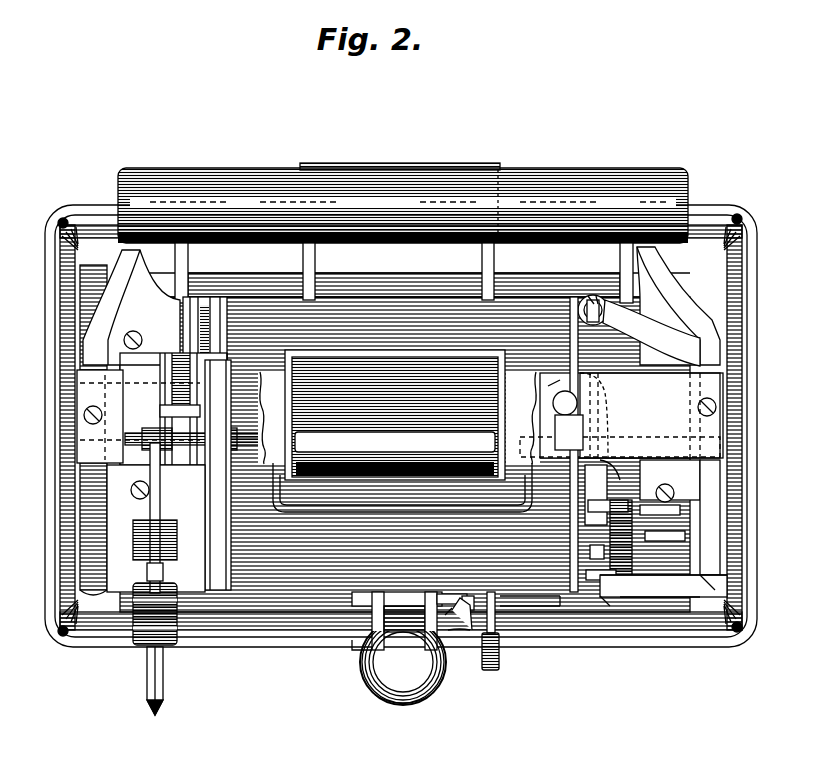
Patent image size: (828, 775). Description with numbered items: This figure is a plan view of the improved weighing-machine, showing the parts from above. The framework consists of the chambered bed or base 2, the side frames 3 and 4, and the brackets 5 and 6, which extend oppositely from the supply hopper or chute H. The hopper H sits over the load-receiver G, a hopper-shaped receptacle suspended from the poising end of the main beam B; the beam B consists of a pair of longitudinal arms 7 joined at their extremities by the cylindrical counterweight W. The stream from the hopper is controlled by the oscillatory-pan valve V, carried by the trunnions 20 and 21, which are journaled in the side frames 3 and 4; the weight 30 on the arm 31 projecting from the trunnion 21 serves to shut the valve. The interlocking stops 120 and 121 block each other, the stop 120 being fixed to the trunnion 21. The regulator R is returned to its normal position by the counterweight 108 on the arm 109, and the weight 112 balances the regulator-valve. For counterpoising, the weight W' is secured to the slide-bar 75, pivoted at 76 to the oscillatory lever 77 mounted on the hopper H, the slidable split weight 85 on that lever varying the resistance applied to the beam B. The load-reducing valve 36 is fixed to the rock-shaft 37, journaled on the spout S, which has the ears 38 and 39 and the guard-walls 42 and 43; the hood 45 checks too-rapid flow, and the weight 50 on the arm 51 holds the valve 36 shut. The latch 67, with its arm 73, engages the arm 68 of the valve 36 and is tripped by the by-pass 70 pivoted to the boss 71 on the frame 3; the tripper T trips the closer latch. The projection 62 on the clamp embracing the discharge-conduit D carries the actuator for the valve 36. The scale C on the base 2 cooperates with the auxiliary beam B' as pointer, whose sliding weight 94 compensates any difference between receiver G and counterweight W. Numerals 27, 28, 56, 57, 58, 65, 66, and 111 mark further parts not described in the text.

The chambered bed or base 2 is at (273, 648).
The load-receiver G is at (385, 438).
The cylindrical counterweight W is at (403, 196).
The counterweight 108 is at (404, 165).
The main beam B is at (404, 272).
The arm 109 is at (315, 260).
The longitudinal arms 7 is at (175, 270).
The interlocking stop 121 is at (183, 330).
The interlocking stop 120 is at (200, 398).
The valve-trunnion 21 is at (138, 432).
The bracket 6 is at (90, 430).
The supply hopper or chute H is at (399, 415).
The stream controller or valve V is at (333, 510).
The regulator R is at (220, 590).
The side frame 4 is at (80, 515).
The arm 31 is at (160, 470).
The weight 30 is at (142, 535).
The auxiliary beam B' is at (138, 573).
The sliding weight 94 is at (150, 622).
The scale C is at (163, 672).
The counterpoise weight W' is at (585, 288).
The pivot 76 is at (580, 312).
The slide-bar 75 is at (590, 298).
The bracket 5 is at (710, 385).
The valve-trunnion 20 is at (682, 432).
The bar 28 is at (630, 458).
The slidable split weight 85 is at (555, 420).
The oscillatory lever 77 is at (542, 383).
The arm 27 is at (622, 486).
The boss 71 is at (676, 493).
The side frame 3 is at (720, 498).
The by-pass 70 is at (588, 506).
The arm of latch 73 is at (585, 530).
The latch 67 is at (590, 552).
The arm of load-reducing valve 68 is at (586, 575).
The weight 112 is at (660, 511).
The spring 111 is at (665, 536).
The spring 56 is at (630, 580).
The spring 57 is at (703, 587).
The ear 38 is at (365, 592).
The overhanging hood 45 is at (400, 610).
The ear 39 is at (440, 594).
The projection 62 is at (455, 594).
The pin 65 is at (468, 596).
The rock-shaft 37 is at (520, 596).
The guard-wall 43 is at (365, 628).
The hook 66 is at (468, 625).
The guard-wall 42 is at (446, 640).
The arm 51 is at (497, 620).
The valve-closing weight 50 is at (500, 658).
The tripper T is at (566, 619).
The bracket 58 is at (612, 606).
The load-reducing valve 36 is at (403, 645).
The spout S is at (372, 682).
The cylindrical discharge-conduit D is at (405, 698).